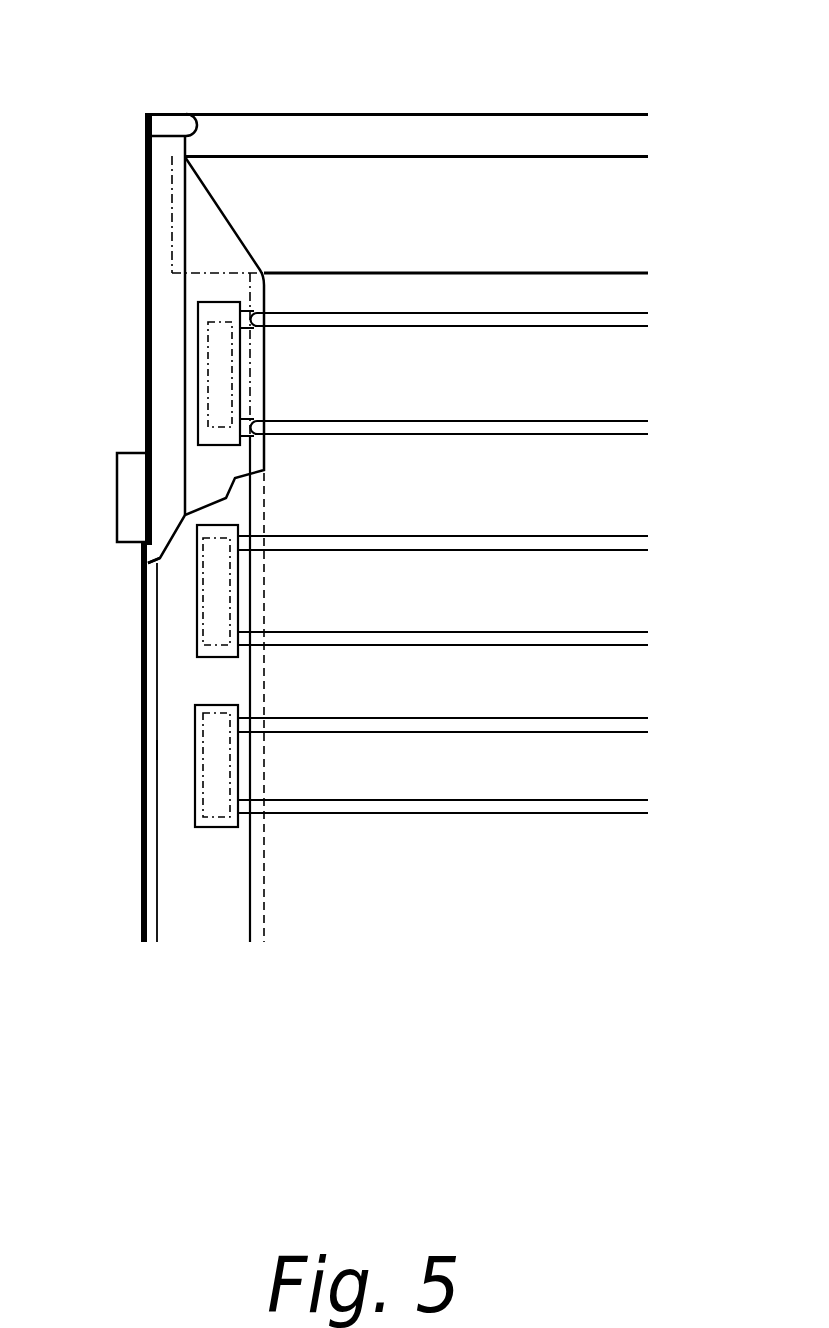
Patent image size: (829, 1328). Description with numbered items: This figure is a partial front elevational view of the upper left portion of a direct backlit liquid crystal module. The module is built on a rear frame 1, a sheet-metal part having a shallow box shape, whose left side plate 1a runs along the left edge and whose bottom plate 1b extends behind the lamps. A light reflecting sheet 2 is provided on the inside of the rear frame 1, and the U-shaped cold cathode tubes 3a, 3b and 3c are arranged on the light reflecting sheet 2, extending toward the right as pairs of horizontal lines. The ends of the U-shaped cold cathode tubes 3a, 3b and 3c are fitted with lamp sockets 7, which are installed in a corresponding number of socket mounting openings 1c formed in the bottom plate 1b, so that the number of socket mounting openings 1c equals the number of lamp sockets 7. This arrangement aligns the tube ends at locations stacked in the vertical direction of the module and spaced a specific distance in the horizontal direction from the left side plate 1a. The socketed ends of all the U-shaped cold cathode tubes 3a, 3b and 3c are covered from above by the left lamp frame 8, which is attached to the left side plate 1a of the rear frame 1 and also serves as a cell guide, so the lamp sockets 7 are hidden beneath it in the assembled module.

The rear frame 1 is at (335, 112).
The left side plate 1a is at (155, 743).
The bottom plate 1b is at (160, 682).
The socket mounting opening 1c is at (190, 563).
The light reflecting sheet 2 is at (533, 360).
The U-shaped cold cathode tube 3a is at (587, 435).
The U-shaped cold cathode tube 3b is at (587, 645).
The U-shaped cold cathode tube 3c is at (585, 813).
The lamp socket 7 is at (240, 380).
The lamp frame 8 is at (197, 468).